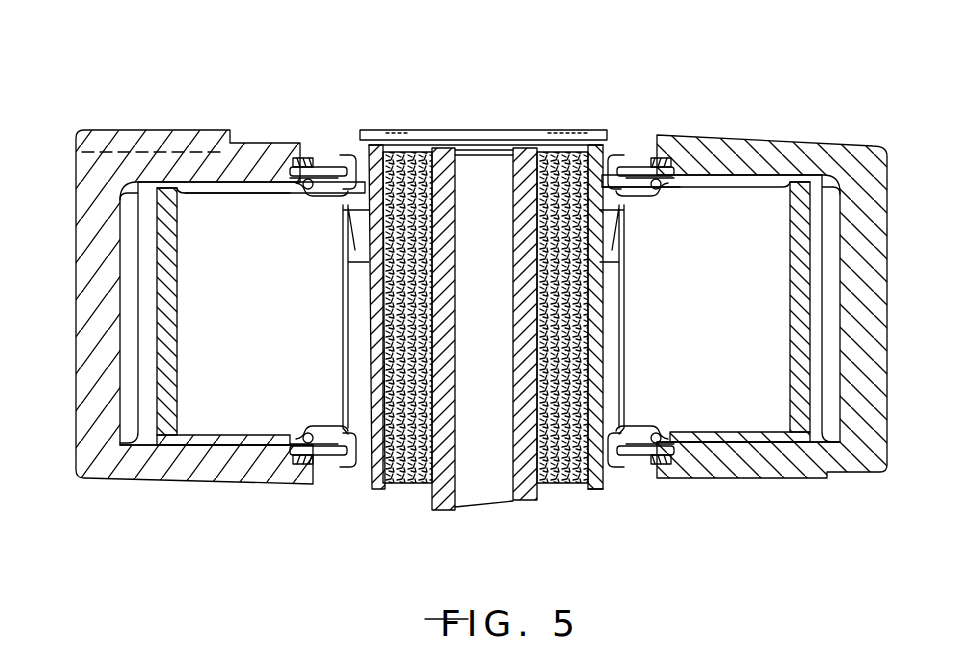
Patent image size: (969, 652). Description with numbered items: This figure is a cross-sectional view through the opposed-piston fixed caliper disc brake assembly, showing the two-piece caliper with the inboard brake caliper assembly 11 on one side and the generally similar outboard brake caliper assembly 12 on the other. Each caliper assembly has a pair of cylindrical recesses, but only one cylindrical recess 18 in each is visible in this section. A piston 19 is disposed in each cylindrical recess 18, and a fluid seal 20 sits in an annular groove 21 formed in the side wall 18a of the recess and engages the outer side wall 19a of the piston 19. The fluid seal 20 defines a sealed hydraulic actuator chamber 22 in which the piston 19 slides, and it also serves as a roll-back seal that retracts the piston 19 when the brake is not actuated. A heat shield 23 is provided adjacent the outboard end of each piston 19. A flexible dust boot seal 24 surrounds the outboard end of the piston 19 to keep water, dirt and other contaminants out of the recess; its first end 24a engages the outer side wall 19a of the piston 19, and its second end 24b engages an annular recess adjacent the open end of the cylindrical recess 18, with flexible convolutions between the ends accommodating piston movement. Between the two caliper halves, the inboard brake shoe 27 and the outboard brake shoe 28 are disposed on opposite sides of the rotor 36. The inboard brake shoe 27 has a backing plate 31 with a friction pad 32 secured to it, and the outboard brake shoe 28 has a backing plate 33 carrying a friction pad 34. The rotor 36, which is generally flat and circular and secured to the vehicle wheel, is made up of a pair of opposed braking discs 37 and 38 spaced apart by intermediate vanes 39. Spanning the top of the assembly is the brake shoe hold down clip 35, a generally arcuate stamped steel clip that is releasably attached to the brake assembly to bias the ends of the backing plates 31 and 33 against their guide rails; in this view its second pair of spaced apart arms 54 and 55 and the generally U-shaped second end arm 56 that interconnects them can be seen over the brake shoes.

The inboard brake caliper assembly 11 is at (898, 172).
The outboard brake caliper assembly 12 is at (80, 356).
The cylindrical recess 18 is at (132, 470).
The side wall of the cylindrical recess 18a is at (212, 195).
The piston 19 is at (178, 338).
The outer side wall of the piston 19a is at (168, 486).
The fluid seal 20 is at (268, 485).
The annular groove 21 is at (266, 196).
The hydraulic actuator chamber 22 is at (125, 240).
The heat shield 23 is at (340, 301).
The dust boot seal 24 is at (336, 135).
The first end of the dust boot seal 24a is at (316, 197).
The second end of the dust boot seal 24b is at (318, 155).
The inboard brake shoe 27 is at (593, 492).
The outboard brake shoe 28 is at (392, 494).
The backing plate 31 is at (620, 493).
The friction pad 32 is at (556, 486).
The backing plate 33 is at (368, 482).
The friction pad 34 is at (413, 491).
The brake shoe hold down clip 35 is at (444, 128).
The rotor 36 is at (488, 130).
The braking disc 37 is at (530, 503).
The braking disc 38 is at (450, 512).
The intermediate vanes 39 is at (484, 508).
The arm 54 is at (390, 130).
The arm 55 is at (576, 130).
The second end arm 56 is at (512, 130).